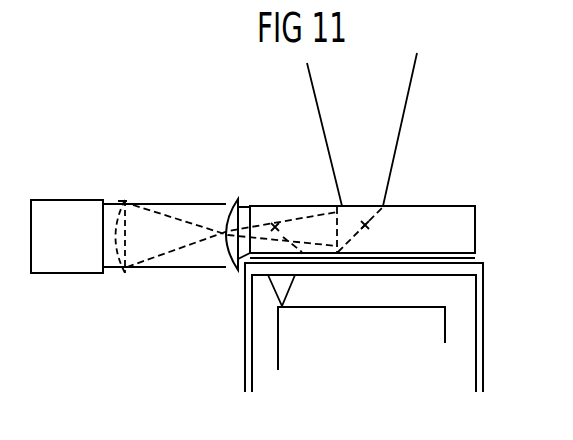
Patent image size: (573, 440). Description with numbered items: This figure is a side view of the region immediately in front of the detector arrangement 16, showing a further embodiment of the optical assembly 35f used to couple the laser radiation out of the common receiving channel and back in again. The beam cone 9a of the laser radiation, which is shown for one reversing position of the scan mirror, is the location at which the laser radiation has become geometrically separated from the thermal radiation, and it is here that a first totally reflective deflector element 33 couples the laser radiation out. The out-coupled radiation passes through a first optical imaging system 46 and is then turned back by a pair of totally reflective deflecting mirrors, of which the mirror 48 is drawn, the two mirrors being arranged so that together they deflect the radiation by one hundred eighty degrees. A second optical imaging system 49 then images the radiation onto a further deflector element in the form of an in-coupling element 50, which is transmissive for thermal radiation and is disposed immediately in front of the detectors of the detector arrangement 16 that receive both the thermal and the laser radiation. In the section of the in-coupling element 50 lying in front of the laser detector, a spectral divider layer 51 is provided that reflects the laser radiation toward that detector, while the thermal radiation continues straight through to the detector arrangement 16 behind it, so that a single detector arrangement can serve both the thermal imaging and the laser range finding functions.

The totally reflective deflecting mirror 48 is at (62, 271).
The first optical imaging system 46 is at (127, 274).
The second optical imaging system 49 is at (233, 269).
The optical assembly 35f is at (162, 198).
The spectral divider layer 51 is at (270, 220).
The in-coupling element 50 is at (476, 222).
The first totally reflective deflector element 33 is at (370, 226).
The beam cone of the laser radiation 9a is at (406, 105).
The detector arrangement 16 is at (494, 294).